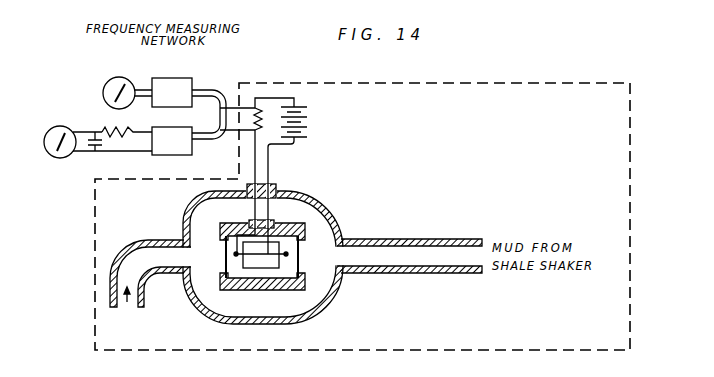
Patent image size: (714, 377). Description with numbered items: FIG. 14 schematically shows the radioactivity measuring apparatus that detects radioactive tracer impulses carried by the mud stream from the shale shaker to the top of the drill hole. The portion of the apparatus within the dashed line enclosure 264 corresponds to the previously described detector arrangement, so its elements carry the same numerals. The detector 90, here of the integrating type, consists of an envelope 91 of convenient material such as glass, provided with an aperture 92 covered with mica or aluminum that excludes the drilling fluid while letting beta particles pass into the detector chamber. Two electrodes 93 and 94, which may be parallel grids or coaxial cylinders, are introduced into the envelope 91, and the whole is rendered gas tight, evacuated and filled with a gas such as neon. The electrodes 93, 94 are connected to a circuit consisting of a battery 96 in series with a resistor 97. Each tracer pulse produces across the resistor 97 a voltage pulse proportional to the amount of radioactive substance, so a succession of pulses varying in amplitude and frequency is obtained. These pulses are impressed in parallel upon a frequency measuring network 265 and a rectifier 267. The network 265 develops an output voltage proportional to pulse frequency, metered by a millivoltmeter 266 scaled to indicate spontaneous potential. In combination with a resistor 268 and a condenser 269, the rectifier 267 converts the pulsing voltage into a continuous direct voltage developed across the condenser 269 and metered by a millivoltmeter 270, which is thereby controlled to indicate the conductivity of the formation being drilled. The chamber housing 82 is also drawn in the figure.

The chamber housing 82 is at (298, 263).
The detector 90 is at (242, 277).
The envelope 91 is at (276, 268).
The aperture 92 is at (226, 262).
The electrode 93 is at (282, 287).
The electrode 94 is at (268, 255).
The battery 96 is at (303, 126).
The resistor 97 is at (259, 125).
The dashed line enclosure 264 is at (632, 115).
The frequency measuring network 265 is at (182, 88).
The millivoltmeter 266 is at (106, 77).
The rectifier 267 is at (163, 150).
The resistor 268 is at (119, 128).
The condenser 269 is at (92, 147).
The millivoltmeter 270 is at (53, 130).